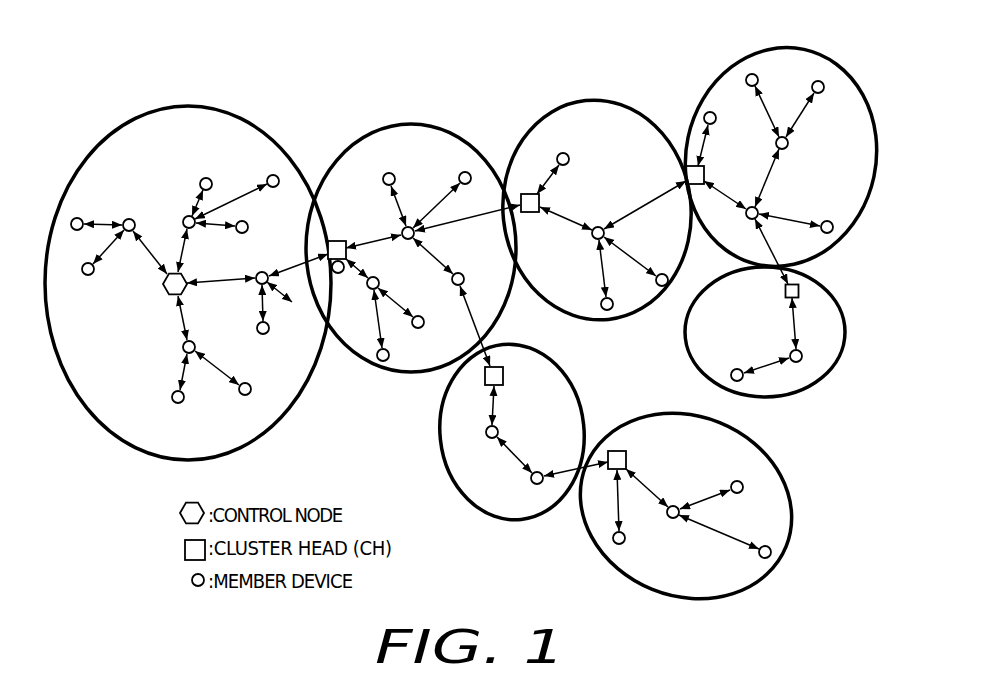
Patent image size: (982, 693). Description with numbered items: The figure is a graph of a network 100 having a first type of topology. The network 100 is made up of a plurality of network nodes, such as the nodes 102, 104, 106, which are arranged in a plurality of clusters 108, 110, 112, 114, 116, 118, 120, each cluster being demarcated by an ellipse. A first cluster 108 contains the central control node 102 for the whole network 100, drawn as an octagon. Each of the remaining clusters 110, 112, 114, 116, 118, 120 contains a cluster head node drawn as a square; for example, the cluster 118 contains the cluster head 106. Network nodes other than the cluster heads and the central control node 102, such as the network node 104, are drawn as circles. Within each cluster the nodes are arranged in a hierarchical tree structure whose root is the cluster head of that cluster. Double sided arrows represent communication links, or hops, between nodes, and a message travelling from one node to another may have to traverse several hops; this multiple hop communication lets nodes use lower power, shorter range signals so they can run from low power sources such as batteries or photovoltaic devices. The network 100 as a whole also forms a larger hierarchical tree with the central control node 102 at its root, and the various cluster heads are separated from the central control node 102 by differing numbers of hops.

The network 100 is at (327, 82).
The central control node 102 is at (172, 293).
The network node 104 is at (252, 391).
The cluster head 106 is at (608, 468).
The first cluster 108 is at (162, 108).
The cluster 110 is at (405, 123).
The cluster 112 is at (585, 97).
The cluster 114 is at (788, 46).
The cluster 116 is at (685, 347).
The cluster 118 is at (777, 467).
The cluster 120 is at (443, 405).